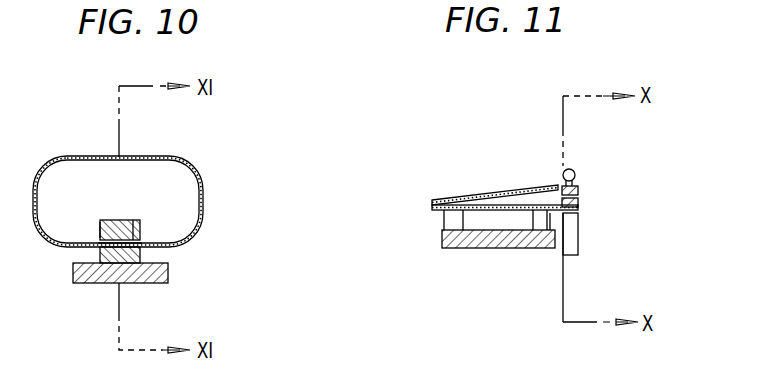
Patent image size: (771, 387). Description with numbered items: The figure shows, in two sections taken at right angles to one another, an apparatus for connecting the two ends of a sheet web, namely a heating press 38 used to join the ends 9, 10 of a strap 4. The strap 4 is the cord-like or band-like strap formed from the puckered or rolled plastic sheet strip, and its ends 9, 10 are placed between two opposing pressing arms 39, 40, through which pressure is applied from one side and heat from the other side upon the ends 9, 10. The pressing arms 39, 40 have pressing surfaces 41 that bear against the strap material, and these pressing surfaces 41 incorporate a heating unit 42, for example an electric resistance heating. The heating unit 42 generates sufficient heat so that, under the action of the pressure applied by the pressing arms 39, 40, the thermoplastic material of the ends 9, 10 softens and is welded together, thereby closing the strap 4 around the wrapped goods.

In FIG. 10, the strap 4 is at (204, 200).
In FIG. 11, the strap 4 is at (572, 243).
In FIG. 10, the end of the strap 9 is at (140, 244).
In FIG. 10, the end of the strap 10 is at (100, 231).
In FIG. 10, the heating press 38 is at (130, 220).
In FIG. 11, the heating press 38 is at (525, 192).
In FIG. 10, the pressing arm 39 is at (137, 222).
In FIG. 11, the pressing arm 39 is at (556, 188).
In FIG. 10, the pressing arm 40 is at (100, 253).
In FIG. 11, the pressing arm 40 is at (578, 203).
In FIG. 11, the pressing surface 41 is at (581, 186).
In FIG. 11, the heating unit 42 is at (578, 190).